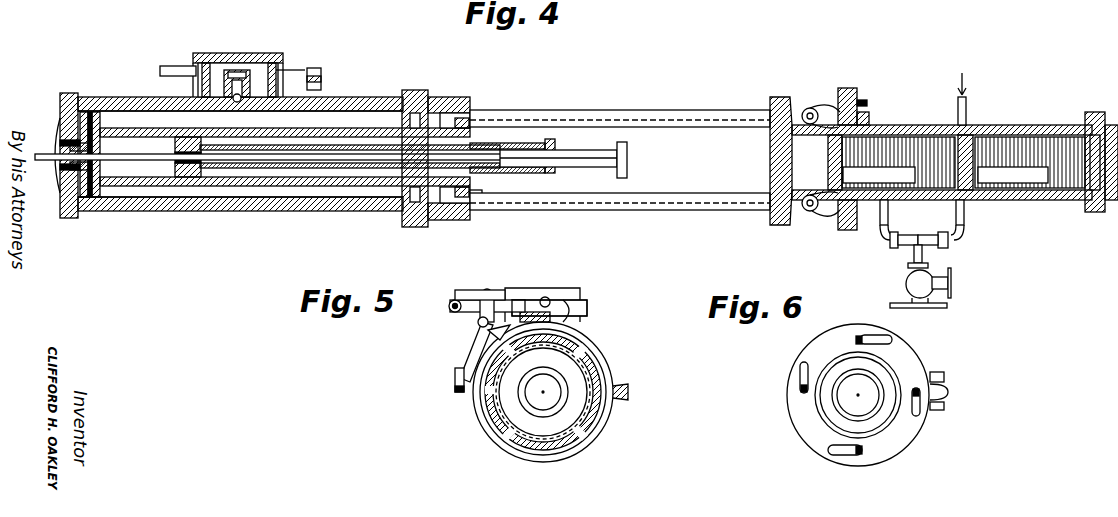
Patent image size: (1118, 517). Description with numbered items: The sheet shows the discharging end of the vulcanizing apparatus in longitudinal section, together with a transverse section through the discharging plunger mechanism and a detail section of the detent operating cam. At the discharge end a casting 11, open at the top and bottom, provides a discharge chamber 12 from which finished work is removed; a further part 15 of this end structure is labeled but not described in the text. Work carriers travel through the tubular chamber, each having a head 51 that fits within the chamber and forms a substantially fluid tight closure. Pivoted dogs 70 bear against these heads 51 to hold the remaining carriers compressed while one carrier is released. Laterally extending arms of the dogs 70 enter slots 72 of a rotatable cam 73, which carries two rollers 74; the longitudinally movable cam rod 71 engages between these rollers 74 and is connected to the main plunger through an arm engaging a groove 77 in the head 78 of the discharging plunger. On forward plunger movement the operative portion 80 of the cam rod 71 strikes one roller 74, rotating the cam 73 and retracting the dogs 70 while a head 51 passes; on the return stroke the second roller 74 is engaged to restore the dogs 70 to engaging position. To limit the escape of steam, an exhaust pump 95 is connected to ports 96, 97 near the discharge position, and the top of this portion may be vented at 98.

In FIG. 4, the casting 11 is at (570, 122).
In FIG. 5, the casting 11 is at (595, 352).
In FIG. 4, the discharge chamber 12 is at (705, 140).
In FIG. 4, the outer cylinder casing 15 is at (266, 212).
In FIG. 4, the head 51 is at (835, 163).
In FIG. 6, the head 51 is at (850, 405).
In FIG. 4, the pivoted dogs 70 is at (820, 110).
In FIG. 6, the pivoted dogs 70 is at (856, 338).
In FIG. 5, the cam rod 71 is at (468, 355).
In FIG. 6, the cam rod 71 is at (950, 392).
In FIG. 4, the slots 72 is at (866, 104).
In FIG. 6, the slots 72 is at (875, 335).
In FIG. 4, the rotatable cam 73 is at (858, 98).
In FIG. 6, the rotatable cam 73 is at (905, 358).
In FIG. 6, the rollers 74 is at (945, 376).
In FIG. 4, the groove 77 is at (468, 108).
In FIG. 4, the head 78 is at (476, 130).
In FIG. 5, the operative portion 80 is at (455, 385).
In FIG. 4, the exhaust pump 95 is at (920, 282).
In FIG. 4, the port 96 is at (888, 213).
In FIG. 4, the port 97 is at (966, 213).
In FIG. 4, the vent 98 is at (967, 110).